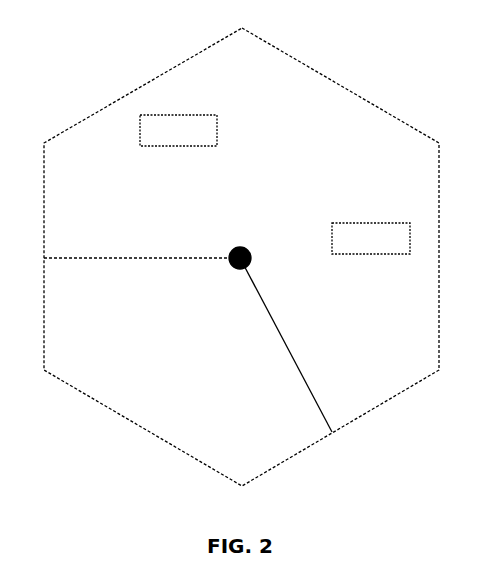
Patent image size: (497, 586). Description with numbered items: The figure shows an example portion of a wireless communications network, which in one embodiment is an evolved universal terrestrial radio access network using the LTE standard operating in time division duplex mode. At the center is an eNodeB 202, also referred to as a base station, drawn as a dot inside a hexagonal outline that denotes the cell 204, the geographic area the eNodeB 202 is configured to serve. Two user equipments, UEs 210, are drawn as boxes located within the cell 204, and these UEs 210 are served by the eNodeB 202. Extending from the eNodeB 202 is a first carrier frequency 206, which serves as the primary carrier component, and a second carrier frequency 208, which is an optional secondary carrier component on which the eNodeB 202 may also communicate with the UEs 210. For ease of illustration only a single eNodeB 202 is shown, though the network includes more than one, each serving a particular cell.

The eNodeB 202 is at (240, 247).
The cell 204 is at (347, 90).
The first carrier frequency 206 is at (157, 259).
The second carrier frequency 208 is at (278, 339).
The user equipment 210 is at (178, 114).